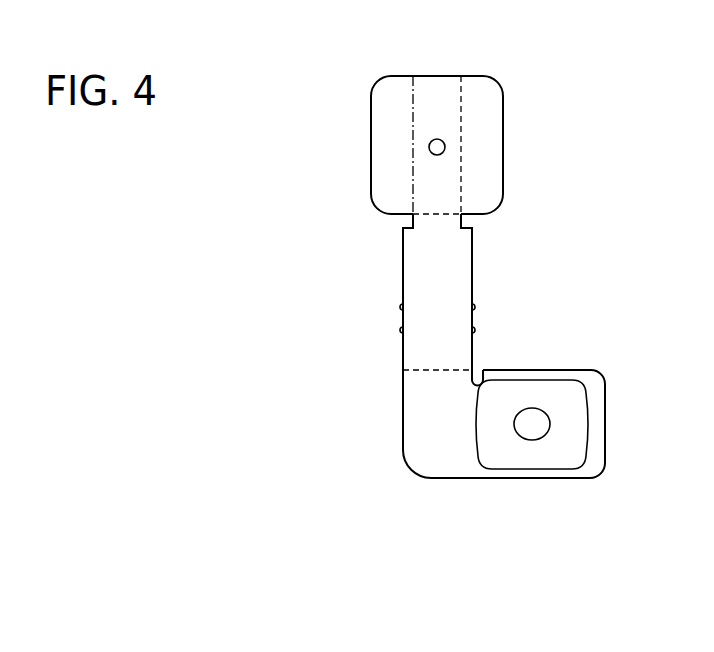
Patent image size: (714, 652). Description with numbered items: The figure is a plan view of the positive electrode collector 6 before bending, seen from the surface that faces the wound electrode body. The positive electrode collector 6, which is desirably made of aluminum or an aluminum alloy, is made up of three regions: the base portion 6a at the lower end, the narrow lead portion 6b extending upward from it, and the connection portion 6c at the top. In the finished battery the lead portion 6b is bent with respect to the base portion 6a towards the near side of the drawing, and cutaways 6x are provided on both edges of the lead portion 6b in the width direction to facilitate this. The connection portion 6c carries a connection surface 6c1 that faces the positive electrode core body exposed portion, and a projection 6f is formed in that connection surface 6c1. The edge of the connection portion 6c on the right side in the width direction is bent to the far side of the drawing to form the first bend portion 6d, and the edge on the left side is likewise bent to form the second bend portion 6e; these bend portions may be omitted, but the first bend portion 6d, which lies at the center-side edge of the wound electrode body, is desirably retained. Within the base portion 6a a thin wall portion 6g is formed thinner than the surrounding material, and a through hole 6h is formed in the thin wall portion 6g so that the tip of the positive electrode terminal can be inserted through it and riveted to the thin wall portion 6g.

The positive electrode collector 6 is at (277, 48).
The base portion 6a is at (425, 425).
The lead portion 6b is at (430, 259).
The connection portion 6c is at (452, 193).
The connection surface 6c1 is at (437, 94).
The first bend portion 6d is at (490, 97).
The second bend portion 6e is at (385, 93).
The projection 6f is at (439, 146).
The thin wall portion 6g is at (570, 397).
The through hole 6h is at (548, 423).
The cutaways 6x is at (403, 330).